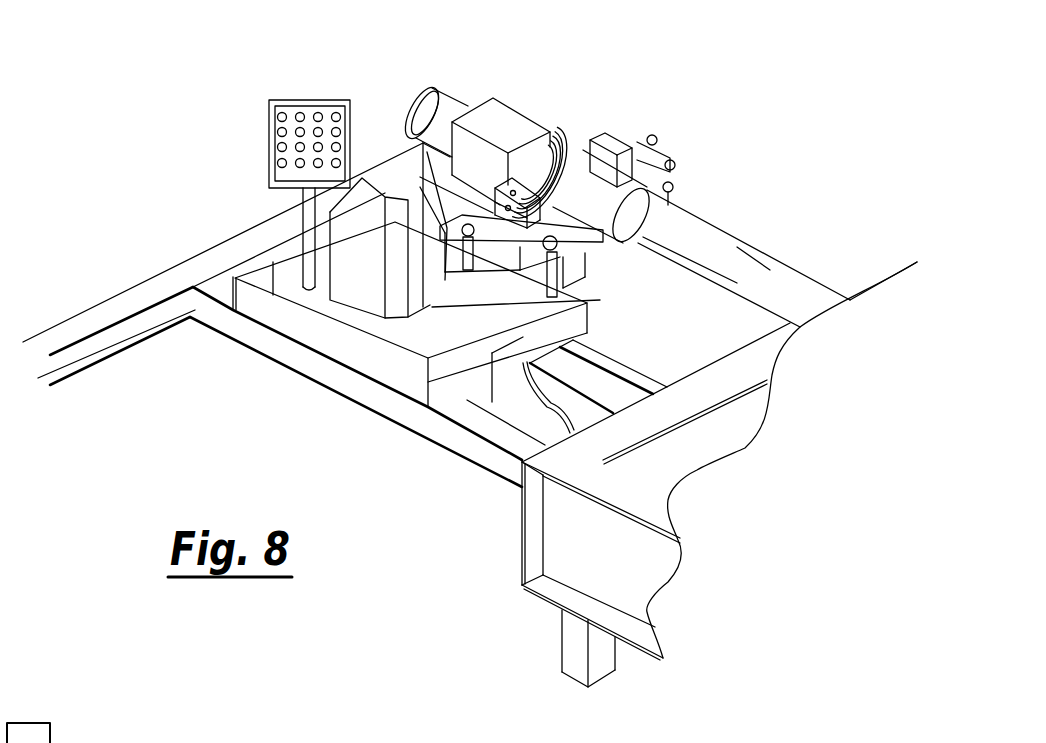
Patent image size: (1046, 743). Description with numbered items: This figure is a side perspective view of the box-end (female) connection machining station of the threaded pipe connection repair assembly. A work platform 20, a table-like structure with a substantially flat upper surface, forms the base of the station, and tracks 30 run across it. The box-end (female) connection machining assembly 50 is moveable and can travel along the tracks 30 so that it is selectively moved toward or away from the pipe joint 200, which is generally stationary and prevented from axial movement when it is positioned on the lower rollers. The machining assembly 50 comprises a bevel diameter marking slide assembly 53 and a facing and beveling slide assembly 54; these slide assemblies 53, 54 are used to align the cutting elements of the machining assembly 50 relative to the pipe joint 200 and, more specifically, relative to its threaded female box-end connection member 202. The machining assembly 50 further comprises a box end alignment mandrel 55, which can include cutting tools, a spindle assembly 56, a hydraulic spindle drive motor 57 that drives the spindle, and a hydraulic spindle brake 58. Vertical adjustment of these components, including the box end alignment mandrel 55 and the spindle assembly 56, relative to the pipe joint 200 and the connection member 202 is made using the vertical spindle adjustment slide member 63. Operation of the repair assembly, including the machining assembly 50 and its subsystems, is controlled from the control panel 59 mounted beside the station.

The work platform 20 is at (602, 570).
The tracks 30 is at (460, 438).
The box-end (female) connection machining assembly 50 is at (566, 98).
The bevel diameter marking slide assembly 53 is at (645, 140).
The facing and beveling slide assembly 54 is at (488, 233).
The box end alignment mandrel 55 is at (550, 143).
The spindle assembly 56 is at (495, 128).
The hydraulic spindle drive motor 57 is at (411, 78).
The hydraulic spindle brake 58 is at (412, 100).
The control panel 59 is at (289, 100).
The vertical spindle adjustment slide member 63 is at (420, 268).
The pipe joint 200 is at (762, 277).
The threaded female box-end connection member 202 is at (597, 180).